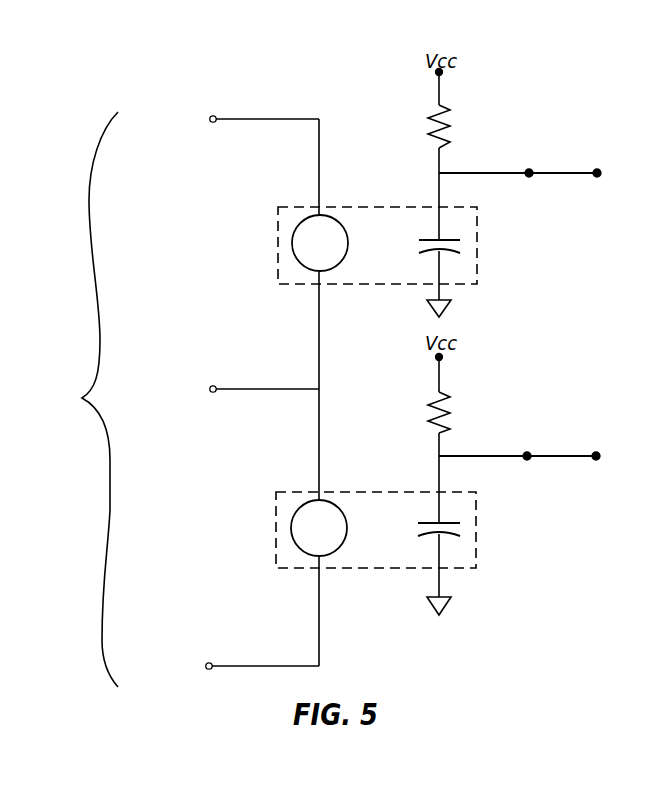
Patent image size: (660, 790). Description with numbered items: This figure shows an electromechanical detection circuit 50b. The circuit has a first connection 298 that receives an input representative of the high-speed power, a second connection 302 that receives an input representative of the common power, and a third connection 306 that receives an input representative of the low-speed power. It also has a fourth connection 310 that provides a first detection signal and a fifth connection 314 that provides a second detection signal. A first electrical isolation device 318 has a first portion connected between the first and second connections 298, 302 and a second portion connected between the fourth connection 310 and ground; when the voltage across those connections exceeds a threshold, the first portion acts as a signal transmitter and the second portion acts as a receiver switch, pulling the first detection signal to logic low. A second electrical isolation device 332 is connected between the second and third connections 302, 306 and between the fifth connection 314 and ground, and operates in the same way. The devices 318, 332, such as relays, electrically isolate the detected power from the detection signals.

The electromechanical detection circuit 50b is at (79, 399).
The first connection 298 is at (209, 117).
The second connection 302 is at (209, 387).
The third connection 306 is at (205, 664).
The fourth connection 310 is at (600, 172).
The fifth connection 314 is at (599, 455).
The first electrical isolation device 318 is at (479, 244).
The second electrical isolation device 332 is at (478, 528).